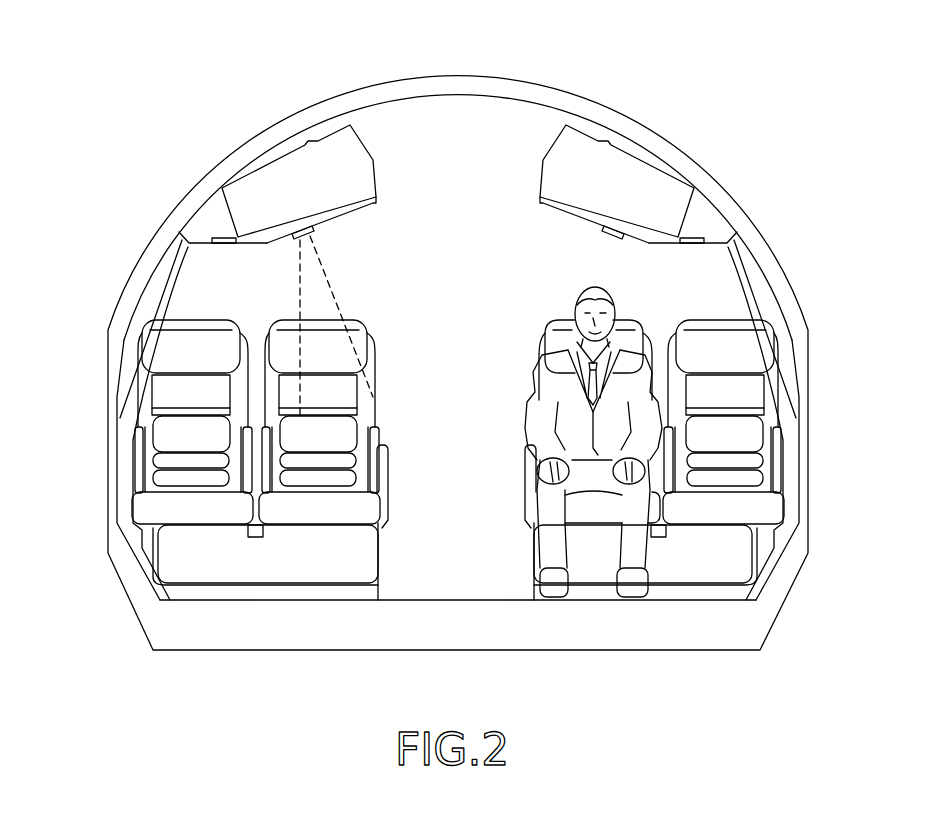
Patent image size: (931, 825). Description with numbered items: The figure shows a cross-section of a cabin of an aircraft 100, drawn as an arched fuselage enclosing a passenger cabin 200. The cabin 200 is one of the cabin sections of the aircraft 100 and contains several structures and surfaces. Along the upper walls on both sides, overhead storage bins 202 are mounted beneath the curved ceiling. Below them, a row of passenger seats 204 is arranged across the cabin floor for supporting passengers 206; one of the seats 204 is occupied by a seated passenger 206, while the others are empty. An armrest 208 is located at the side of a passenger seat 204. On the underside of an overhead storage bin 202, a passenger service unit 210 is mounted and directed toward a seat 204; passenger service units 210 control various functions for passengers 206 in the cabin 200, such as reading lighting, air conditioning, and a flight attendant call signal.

The aircraft 100 is at (137, 109).
The cabin 200 is at (490, 497).
The overhead storage bins 202 is at (247, 222).
The passenger seats 204 is at (330, 397).
The passengers 206 is at (660, 298).
The armrest 208 is at (392, 457).
The passenger service units 210 is at (302, 226).